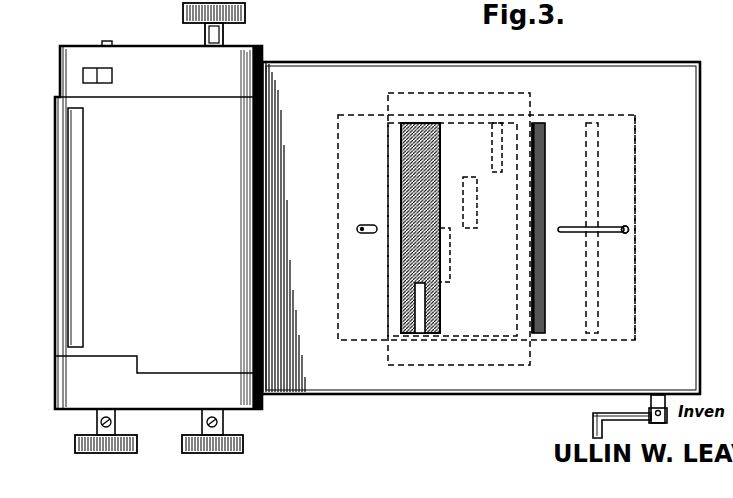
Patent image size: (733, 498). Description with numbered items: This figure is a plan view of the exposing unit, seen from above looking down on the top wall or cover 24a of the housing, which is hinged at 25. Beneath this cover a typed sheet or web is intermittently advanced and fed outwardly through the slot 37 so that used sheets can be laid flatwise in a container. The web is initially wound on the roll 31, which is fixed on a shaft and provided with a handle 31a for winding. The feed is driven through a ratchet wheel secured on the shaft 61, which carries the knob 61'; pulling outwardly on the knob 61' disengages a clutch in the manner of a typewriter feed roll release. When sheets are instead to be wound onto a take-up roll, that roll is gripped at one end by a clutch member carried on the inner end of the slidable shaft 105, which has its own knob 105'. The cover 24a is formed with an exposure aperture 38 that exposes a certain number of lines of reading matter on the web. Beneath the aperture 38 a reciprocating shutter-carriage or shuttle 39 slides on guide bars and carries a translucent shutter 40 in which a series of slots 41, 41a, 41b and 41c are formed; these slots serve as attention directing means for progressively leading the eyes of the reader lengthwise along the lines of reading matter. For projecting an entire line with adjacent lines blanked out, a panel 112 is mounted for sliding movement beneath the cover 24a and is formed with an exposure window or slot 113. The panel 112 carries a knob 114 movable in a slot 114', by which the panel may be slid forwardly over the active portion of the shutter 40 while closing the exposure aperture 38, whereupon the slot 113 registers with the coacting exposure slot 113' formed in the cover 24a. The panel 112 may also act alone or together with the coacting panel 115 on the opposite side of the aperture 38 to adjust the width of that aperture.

The hinge 25 is at (58, 199).
The slot 37 is at (78, 242).
The shaft 61 is at (108, 221).
The knob 61' is at (112, 459).
The slidable shaft 105 is at (201, 408).
The knob 105' is at (244, 443).
The top wall or cover 24a is at (328, 72).
The reciprocating shutter-carriage or shuttle 39 is at (469, 366).
The coacting panel 115 is at (350, 197).
The panel 112 is at (634, 162).
The exposure window or slot 113 is at (581, 213).
The slot 41c is at (492, 150).
The slot 41b is at (481, 198).
The slot 41a is at (450, 257).
The exposure aperture 38 is at (418, 123).
The slot 41 is at (422, 314).
The translucent shutter 40 is at (447, 132).
The coacting exposure aperture or slot 113' is at (565, 228).
The knob 114 is at (620, 244).
The slot 114' is at (649, 205).
The roll 31 is at (657, 397).
The handle 31a is at (613, 414).